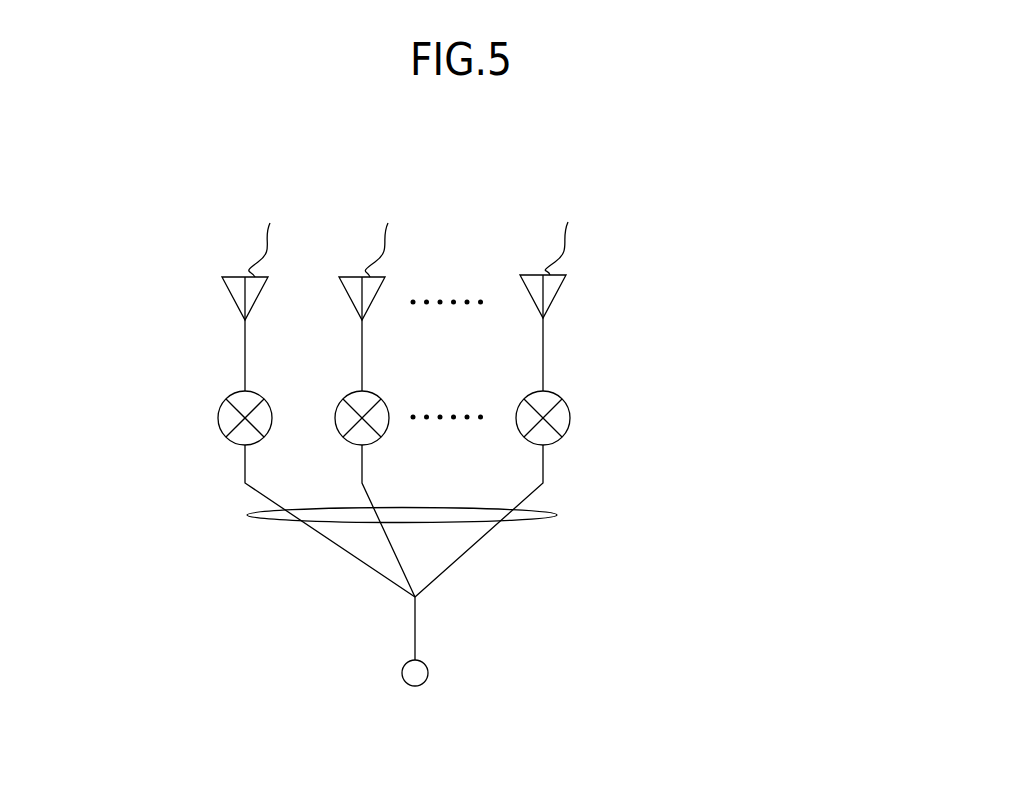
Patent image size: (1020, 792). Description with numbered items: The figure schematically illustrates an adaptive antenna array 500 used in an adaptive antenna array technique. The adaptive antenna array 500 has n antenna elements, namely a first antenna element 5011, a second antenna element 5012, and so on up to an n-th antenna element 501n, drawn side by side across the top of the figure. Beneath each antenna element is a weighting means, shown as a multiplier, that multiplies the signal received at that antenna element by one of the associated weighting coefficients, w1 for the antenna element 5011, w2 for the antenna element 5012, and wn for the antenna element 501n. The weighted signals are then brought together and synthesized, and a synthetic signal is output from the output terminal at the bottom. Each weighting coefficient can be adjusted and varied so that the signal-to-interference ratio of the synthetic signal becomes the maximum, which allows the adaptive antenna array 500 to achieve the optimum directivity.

The adaptive antenna array 500 is at (613, 143).
The antenna element 5011 is at (240, 277).
The antenna element 5012 is at (380, 277).
The antenna element 501n is at (565, 273).